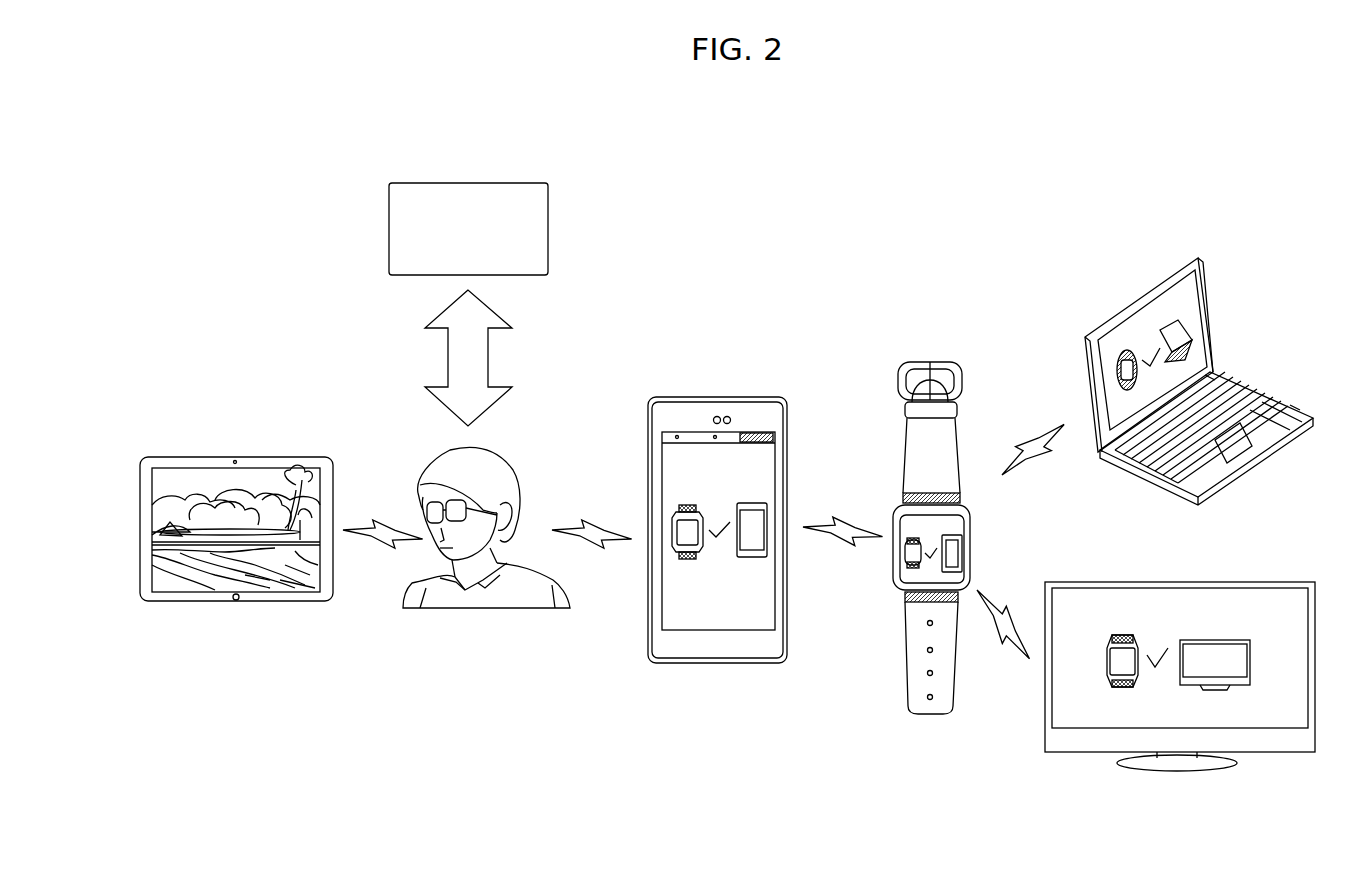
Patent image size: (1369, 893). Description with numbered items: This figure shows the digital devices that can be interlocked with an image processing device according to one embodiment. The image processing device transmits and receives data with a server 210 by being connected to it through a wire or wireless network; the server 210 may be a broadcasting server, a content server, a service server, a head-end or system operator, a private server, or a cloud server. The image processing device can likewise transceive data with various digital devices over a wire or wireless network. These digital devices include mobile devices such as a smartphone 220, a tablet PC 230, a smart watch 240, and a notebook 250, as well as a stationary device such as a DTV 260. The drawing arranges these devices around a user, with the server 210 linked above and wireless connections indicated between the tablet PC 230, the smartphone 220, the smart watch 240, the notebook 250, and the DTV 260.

The server 210 is at (518, 182).
The smartphone 220 is at (730, 397).
The tablet PC 230 is at (253, 457).
The smart watch 240 is at (942, 362).
The notebook 250 is at (1198, 257).
The DTV 260 is at (1174, 582).